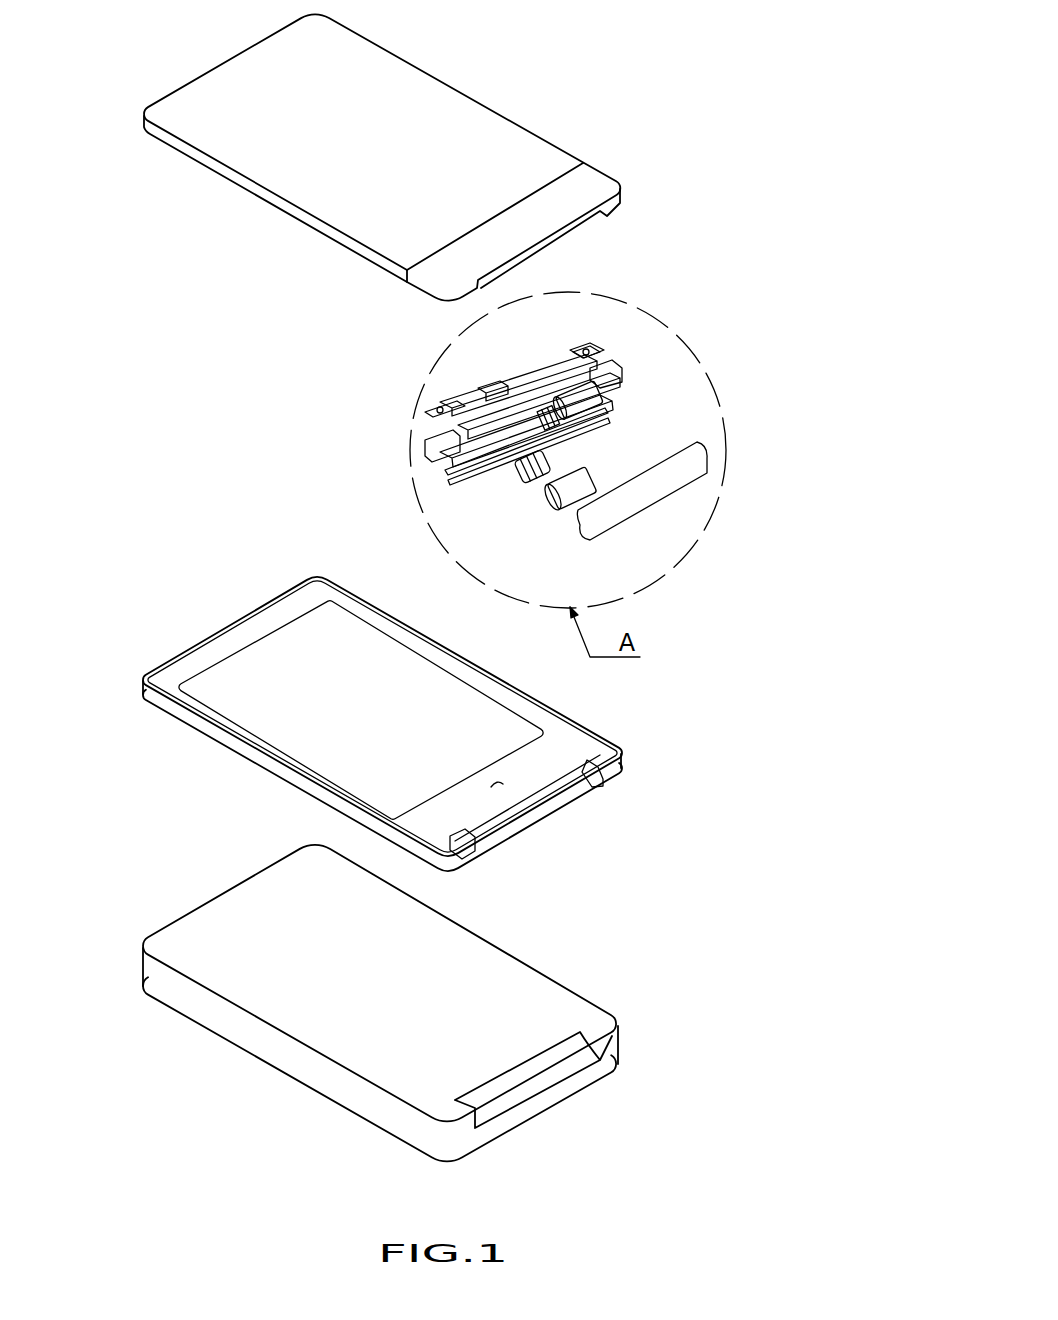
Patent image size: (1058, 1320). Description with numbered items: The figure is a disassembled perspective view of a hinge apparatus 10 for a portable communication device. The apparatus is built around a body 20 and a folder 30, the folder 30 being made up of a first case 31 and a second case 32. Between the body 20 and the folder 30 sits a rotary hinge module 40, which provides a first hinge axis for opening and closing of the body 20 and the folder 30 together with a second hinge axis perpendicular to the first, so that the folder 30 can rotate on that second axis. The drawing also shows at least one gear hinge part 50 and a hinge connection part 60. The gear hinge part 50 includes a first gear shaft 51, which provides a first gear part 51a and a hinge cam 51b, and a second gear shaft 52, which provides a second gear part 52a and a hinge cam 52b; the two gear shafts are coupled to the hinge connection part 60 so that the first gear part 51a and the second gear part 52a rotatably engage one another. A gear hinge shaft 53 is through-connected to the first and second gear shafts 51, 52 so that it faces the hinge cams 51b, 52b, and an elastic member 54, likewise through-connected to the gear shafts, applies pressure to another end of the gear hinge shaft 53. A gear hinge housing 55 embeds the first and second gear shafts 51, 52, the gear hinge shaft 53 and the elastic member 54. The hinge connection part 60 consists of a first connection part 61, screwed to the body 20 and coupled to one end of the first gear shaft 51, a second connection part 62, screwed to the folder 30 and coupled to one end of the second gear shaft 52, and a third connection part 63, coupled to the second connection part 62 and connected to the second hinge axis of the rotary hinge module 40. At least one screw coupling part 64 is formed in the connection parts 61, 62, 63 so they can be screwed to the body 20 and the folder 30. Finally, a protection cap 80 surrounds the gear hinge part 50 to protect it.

The hinge apparatus 10 is at (612, 98).
The body 20 is at (217, 1027).
The folder 30 is at (70, 290).
The first case 31 is at (215, 635).
The second case 32 is at (252, 192).
The rotary hinge module 40 is at (478, 378).
The gear hinge part 50 is at (852, 240).
The first gear shaft 51 is at (793, 625).
The first gear part 51a is at (515, 487).
The hinge cam 51b is at (500, 473).
The second gear shaft 52 is at (795, 218).
The second gear part 52a is at (608, 368).
The hinge cam 52b is at (580, 358).
The gear hinge shaft 53 is at (605, 450).
The elastic member 54 is at (612, 418).
The gear hinge housing 55 is at (590, 472).
The hinge connection part 60 is at (243, 345).
The first connection part 61 is at (448, 480).
The second connection part 62 is at (445, 454).
The third connection part 63 is at (442, 433).
The screw coupling part 64 is at (445, 385).
The protection cap 80 is at (640, 505).